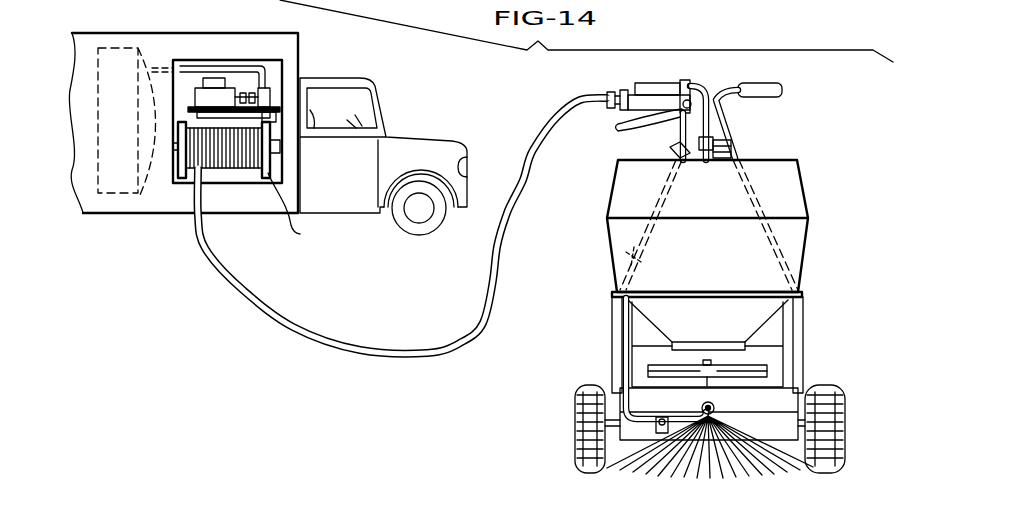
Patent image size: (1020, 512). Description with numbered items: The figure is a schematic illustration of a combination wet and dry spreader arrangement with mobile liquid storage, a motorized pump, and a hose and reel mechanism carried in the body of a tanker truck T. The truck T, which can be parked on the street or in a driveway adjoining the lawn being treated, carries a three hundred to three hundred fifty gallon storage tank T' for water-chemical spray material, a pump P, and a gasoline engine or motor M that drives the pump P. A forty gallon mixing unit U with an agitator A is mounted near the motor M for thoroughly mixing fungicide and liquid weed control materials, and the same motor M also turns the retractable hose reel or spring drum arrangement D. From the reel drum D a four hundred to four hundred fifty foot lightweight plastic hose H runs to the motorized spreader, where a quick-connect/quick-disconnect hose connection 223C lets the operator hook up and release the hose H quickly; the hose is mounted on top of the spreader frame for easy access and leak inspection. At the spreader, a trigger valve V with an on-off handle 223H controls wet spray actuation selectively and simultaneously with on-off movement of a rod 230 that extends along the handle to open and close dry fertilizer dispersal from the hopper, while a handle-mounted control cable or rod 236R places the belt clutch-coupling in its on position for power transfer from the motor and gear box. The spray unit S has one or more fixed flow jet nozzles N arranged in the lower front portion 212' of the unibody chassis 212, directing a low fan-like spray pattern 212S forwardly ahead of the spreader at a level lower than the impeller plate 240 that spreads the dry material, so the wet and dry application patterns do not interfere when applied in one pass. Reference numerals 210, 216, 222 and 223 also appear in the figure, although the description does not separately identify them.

The tanker truck T is at (268, 134).
The storage tank T' is at (135, 99).
The motor M is at (214, 96).
The pump P is at (270, 96).
The agitator A is at (276, 115).
The mixing unit U is at (200, 113).
The hose reel drum D is at (289, 209).
The hose H is at (467, 348).
The valve assembly 223 is at (624, 109).
The quick-disconnect connection 223C is at (612, 110).
The trigger valve V is at (652, 100).
The on-off handle 223H is at (668, 118).
The handle grip 222 is at (762, 83).
The rod 230 is at (742, 156).
The control rod 236R is at (701, 161).
The spreader 210 is at (642, 336).
The hopper 216 is at (800, 252).
The unibody chassis 212 is at (746, 343).
The lower front portion 212' is at (745, 393).
The impeller plate 240 is at (657, 363).
The nozzle N is at (716, 408).
The spray pattern 212S is at (733, 470).
The spray unit S is at (630, 240).